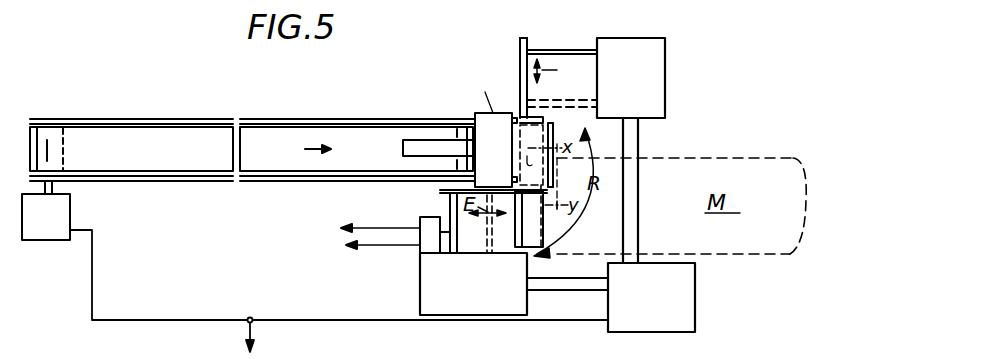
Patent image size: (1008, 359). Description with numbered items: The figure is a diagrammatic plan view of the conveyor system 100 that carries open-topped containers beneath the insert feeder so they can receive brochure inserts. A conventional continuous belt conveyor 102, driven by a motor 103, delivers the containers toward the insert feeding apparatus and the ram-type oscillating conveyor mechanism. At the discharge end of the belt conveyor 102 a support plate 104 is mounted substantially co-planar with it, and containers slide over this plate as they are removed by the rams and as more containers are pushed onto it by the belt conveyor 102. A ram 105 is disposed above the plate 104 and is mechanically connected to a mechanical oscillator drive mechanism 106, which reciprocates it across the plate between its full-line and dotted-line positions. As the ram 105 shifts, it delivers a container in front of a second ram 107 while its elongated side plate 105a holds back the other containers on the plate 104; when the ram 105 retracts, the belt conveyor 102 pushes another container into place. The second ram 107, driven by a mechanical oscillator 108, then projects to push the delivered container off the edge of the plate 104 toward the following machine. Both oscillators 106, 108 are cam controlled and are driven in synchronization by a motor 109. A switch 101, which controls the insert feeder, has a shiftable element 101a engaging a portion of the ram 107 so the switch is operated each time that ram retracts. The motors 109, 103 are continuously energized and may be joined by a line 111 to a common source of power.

The conveyor system 100 is at (506, 96).
The switch 101 is at (432, 225).
The shiftable element 101a is at (448, 254).
The belt conveyor 102 is at (283, 142).
The motor 103 is at (70, 210).
The support plate 104 is at (517, 161).
The ram 105 is at (537, 117).
The elongated side plate 105a is at (522, 58).
The mechanical oscillator drive mechanism 106 is at (648, 90).
The second ram 107 is at (518, 228).
The mechanical oscillator 108 is at (495, 308).
The motor 109 is at (672, 311).
The line 111 is at (350, 321).